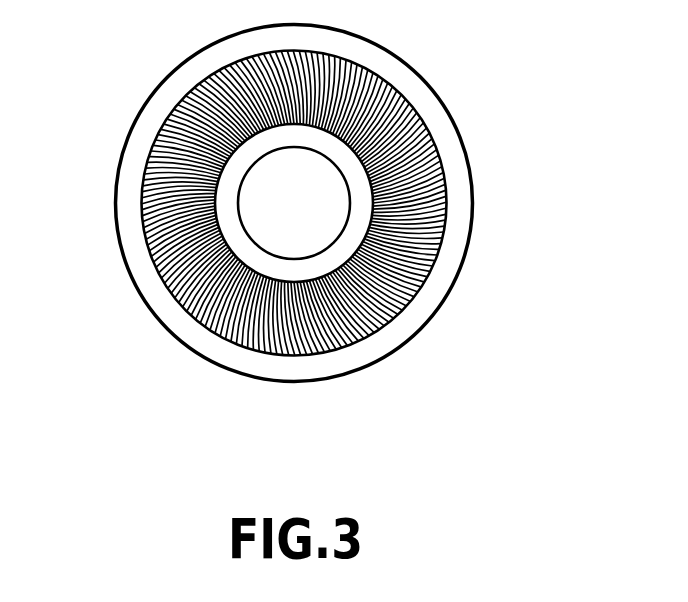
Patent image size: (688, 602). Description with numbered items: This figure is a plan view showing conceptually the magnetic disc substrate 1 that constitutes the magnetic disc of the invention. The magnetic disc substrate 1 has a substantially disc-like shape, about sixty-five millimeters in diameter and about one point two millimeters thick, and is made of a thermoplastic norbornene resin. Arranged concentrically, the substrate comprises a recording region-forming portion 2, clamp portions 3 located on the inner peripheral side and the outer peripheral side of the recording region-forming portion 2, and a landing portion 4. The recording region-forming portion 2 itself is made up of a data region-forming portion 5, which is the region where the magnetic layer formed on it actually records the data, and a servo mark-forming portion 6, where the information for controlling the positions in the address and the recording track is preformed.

The magnetic disc substrate 1 is at (496, 123).
The recording region-forming portion 2 is at (254, 341).
The clamp portions 3 is at (343, 152).
The landing portion 4 is at (130, 252).
The data region-forming portion 5 is at (397, 315).
The servo mark-forming portion 6 is at (418, 275).